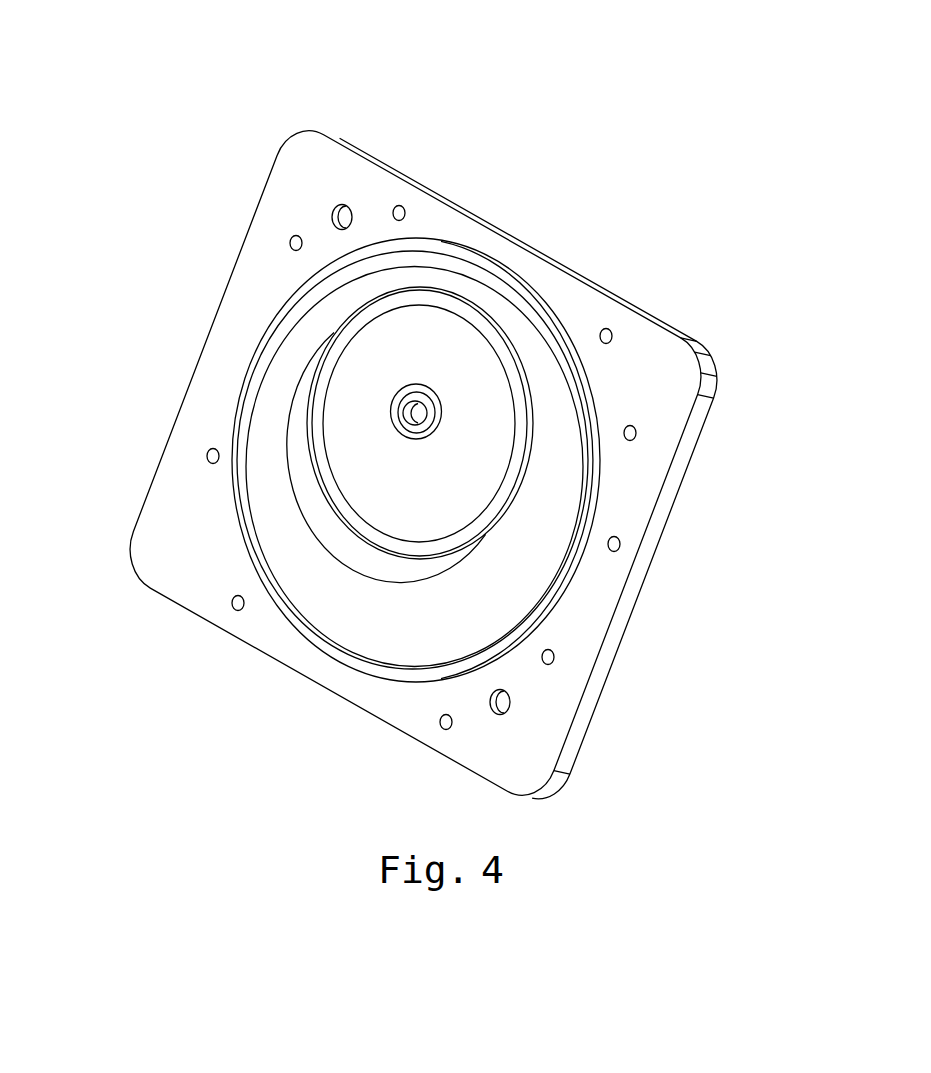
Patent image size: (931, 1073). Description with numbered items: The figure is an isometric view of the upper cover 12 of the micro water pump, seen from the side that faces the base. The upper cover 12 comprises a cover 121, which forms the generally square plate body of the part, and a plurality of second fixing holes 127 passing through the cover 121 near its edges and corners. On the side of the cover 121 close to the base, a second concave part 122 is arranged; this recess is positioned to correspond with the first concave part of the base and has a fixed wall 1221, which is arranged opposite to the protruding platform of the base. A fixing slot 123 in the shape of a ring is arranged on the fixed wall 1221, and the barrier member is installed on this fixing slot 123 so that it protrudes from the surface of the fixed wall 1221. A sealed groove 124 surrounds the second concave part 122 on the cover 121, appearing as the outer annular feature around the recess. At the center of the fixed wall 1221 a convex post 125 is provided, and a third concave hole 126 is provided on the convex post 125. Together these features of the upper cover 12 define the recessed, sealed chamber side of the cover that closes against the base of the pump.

The upper cover 12 is at (427, 46).
The cover 121 is at (372, 180).
The second concave part 122 is at (310, 365).
The fixing slot 123 is at (320, 430).
The fixed wall 1221 is at (430, 350).
The sealed groove 124 is at (577, 556).
The convex post 125 is at (434, 406).
The third concave hole 126 is at (418, 419).
The second fixing holes 127 is at (608, 332).